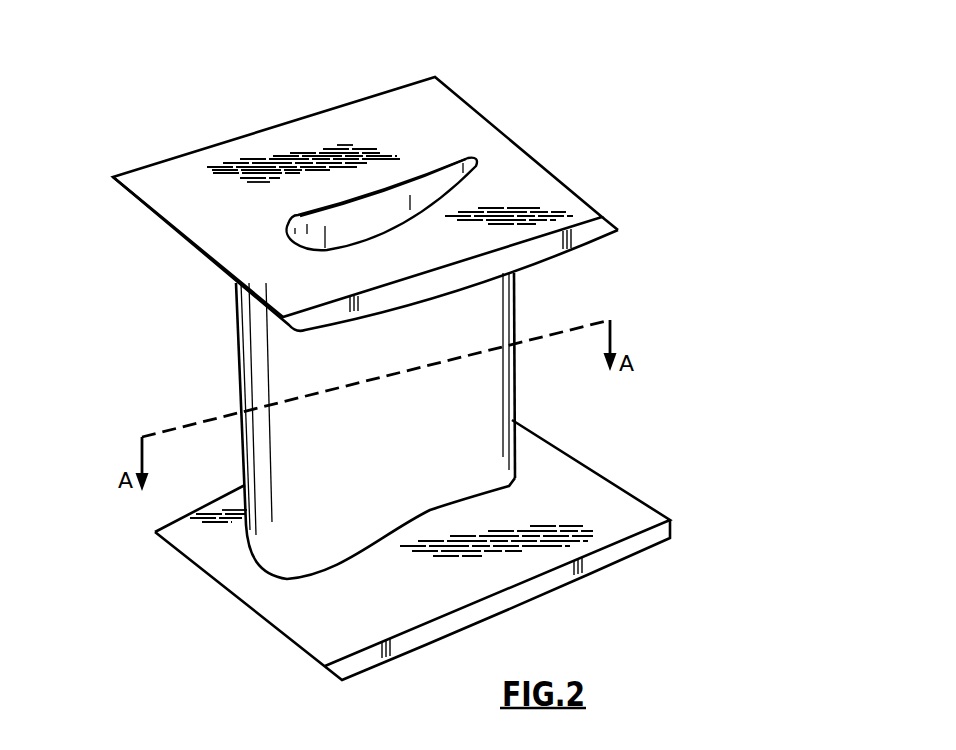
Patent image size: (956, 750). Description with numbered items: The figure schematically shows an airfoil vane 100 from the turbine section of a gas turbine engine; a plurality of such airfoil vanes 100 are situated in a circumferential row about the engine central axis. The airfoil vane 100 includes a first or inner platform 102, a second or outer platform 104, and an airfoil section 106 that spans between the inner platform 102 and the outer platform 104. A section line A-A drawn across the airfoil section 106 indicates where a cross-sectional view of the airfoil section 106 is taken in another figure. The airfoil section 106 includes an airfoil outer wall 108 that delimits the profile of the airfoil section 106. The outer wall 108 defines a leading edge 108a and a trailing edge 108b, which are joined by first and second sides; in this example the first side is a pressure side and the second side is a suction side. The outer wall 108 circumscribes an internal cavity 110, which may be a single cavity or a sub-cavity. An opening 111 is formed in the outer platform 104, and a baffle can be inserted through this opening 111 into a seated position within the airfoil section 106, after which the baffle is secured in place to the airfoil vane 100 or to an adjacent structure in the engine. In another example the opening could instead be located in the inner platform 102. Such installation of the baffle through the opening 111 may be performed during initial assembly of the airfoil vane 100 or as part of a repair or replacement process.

The airfoil vane 100 is at (153, 76).
The inner platform 102 is at (615, 513).
The outer platform 104 is at (563, 207).
The airfoil section 106 is at (493, 313).
The airfoil outer wall 108 is at (412, 455).
The leading edge 108a is at (184, 343).
The trailing edge 108b is at (553, 398).
The internal cavity 110 is at (338, 232).
The opening 111 is at (385, 168).